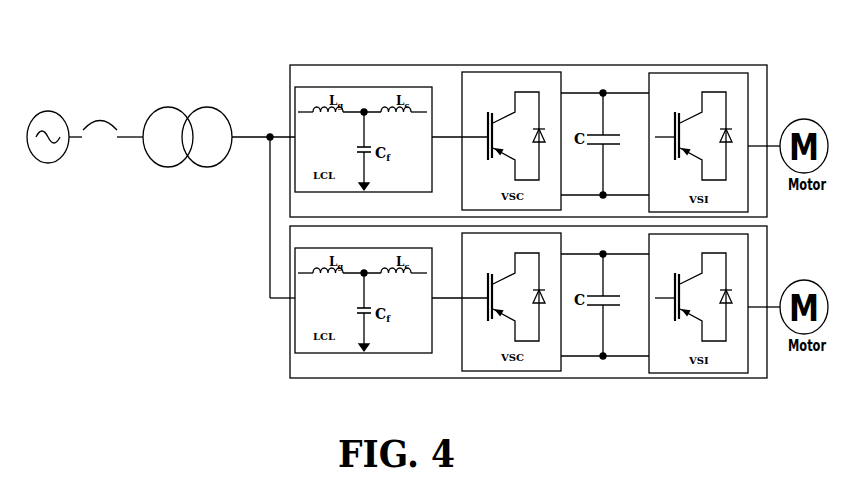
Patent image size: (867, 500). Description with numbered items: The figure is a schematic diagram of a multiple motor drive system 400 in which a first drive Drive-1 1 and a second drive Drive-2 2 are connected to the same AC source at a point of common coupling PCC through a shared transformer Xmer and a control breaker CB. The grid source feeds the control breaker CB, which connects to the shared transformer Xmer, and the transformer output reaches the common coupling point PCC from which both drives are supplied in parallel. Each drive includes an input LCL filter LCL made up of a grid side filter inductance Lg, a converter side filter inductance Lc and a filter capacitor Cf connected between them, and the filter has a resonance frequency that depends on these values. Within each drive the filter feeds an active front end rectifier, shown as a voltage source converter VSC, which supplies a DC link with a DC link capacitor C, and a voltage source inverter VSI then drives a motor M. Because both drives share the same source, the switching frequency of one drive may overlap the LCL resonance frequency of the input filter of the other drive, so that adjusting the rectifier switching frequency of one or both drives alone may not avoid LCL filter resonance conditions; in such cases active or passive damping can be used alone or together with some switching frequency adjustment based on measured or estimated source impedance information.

The multiple motor drive system 400 is at (427, 203).
The Drive- 1 is at (528, 141).
The Drive- 2 is at (528, 302).
The control breaker CB is at (100, 141).
The shared transformer Xmer is at (190, 149).
The AC source PCC is at (275, 209).
The LCL filter LCL is at (391, 220).
The grid side filter inductance Lg is at (328, 183).
The converter side filter inductance Lc is at (396, 183).
The filter capacitor Cf is at (374, 231).
The voltage source converter (active rectifier) VSC is at (511, 221).
The DC link capacitor C is at (605, 224).
The voltage source inverter VSI is at (698, 223).
The motor M is at (788, 237).